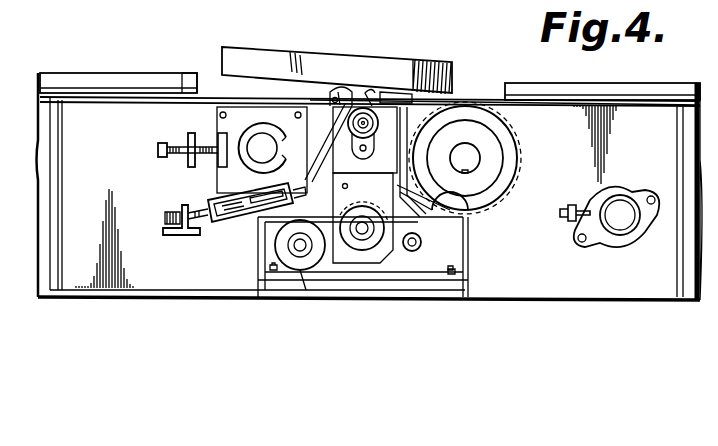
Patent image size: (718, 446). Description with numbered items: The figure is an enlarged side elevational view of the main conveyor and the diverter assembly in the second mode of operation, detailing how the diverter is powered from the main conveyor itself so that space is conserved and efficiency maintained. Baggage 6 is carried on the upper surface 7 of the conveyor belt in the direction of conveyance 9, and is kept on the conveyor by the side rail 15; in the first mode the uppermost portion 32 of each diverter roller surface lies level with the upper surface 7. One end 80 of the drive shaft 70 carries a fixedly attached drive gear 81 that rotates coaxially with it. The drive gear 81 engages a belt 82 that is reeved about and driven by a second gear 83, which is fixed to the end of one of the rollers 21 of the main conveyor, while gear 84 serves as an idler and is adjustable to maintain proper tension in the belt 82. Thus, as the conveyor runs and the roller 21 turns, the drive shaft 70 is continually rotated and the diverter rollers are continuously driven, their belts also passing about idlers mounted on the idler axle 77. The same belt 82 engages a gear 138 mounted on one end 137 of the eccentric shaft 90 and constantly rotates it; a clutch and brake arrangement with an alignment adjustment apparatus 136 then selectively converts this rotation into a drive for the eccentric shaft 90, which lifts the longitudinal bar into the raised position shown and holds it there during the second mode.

The baggage 6 is at (224, 48).
The upper surface 7 is at (487, 99).
The direction of conveyance 9 is at (188, 78).
The side rail 15 is at (118, 75).
The roller 21 is at (475, 150).
The uppermost portion 32 is at (345, 92).
The drive shaft 70 is at (300, 245).
The idler axle 77 is at (421, 242).
The end of drive shaft 80 is at (294, 247).
The drive gear 81 is at (303, 266).
The belt 82 is at (470, 214).
The second gear 83 is at (522, 142).
The idler gear 84 is at (364, 106).
The eccentric shaft 90 is at (362, 252).
The alignment adjustment apparatus 136 is at (172, 182).
The end of eccentric shaft 137 is at (350, 210).
The gear 138 is at (424, 262).